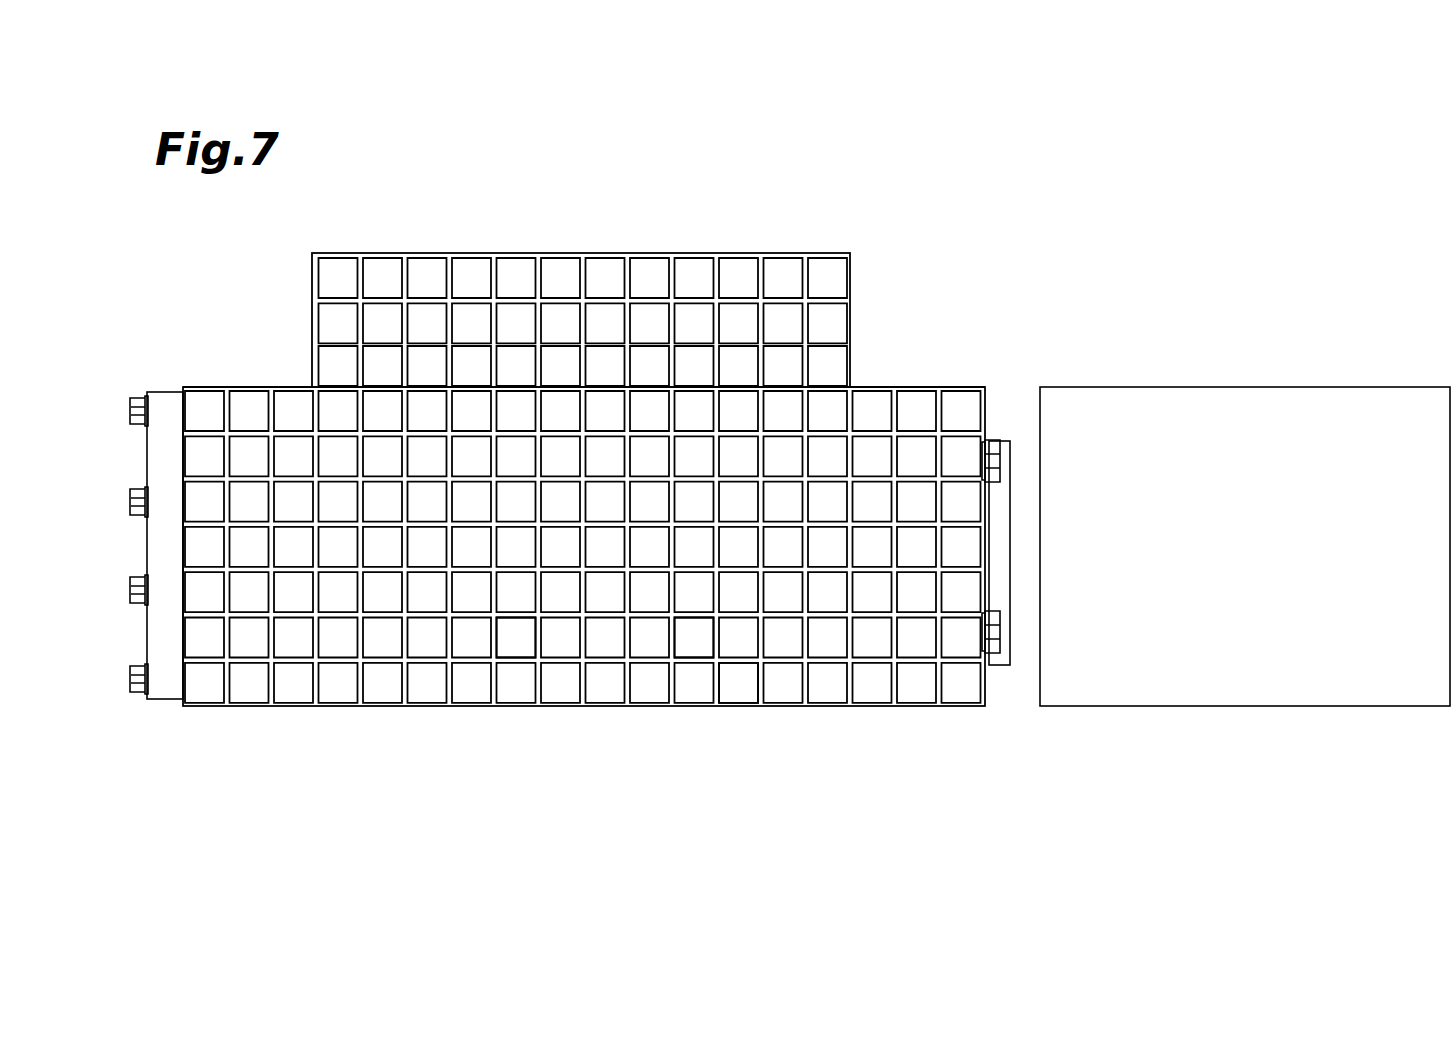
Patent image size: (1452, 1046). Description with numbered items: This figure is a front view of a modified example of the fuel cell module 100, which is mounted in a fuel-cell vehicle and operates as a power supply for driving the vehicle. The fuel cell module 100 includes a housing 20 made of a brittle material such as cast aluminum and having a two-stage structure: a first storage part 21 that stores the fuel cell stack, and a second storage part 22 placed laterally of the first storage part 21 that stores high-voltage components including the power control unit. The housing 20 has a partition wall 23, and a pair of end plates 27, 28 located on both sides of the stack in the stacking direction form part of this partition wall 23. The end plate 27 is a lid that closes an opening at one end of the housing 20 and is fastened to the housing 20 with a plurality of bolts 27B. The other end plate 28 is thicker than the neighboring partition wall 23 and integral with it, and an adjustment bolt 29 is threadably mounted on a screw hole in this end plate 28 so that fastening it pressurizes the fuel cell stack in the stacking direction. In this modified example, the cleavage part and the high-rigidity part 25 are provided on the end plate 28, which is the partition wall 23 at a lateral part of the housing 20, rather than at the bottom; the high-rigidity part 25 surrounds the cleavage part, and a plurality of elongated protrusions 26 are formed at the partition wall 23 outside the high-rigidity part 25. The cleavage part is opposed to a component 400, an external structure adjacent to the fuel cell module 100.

The fuel cell module 100 is at (892, 223).
The housing 20 is at (855, 176).
The first storage part 21 is at (918, 388).
The second storage part 22 is at (729, 253).
The partition wall 23 is at (512, 637).
The high-rigidity part 25 is at (996, 666).
The elongated protrusions 26 is at (688, 658).
The end plate 27 is at (168, 392).
The bolts 27B is at (131, 592).
The end plate 28 is at (958, 387).
The adjustment bolt 29 is at (993, 438).
The component 400 is at (1297, 385).